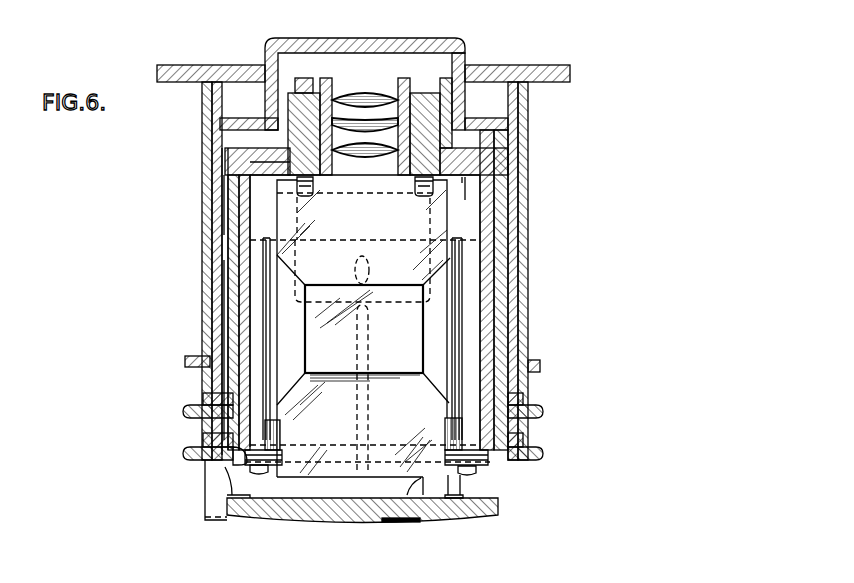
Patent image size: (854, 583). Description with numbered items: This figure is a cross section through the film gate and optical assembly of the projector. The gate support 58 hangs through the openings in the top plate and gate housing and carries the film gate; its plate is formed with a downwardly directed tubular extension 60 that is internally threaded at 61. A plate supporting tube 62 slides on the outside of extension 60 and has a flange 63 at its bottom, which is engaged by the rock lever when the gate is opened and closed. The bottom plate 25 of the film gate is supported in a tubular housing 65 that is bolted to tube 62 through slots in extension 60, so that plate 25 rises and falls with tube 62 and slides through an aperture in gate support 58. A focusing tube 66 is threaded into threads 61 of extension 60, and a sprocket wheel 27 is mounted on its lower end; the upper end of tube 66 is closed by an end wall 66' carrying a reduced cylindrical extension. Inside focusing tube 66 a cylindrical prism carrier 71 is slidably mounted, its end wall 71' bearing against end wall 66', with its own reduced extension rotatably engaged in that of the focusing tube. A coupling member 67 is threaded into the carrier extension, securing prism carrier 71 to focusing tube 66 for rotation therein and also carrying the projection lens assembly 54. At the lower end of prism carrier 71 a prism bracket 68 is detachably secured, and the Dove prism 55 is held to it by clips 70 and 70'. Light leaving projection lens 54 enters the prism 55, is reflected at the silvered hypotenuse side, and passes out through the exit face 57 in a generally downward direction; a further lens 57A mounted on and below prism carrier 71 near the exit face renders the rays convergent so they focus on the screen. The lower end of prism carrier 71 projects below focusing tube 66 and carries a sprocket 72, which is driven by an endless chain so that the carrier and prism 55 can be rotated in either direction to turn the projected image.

The bottom plate 25 is at (374, 40).
The tubular housing 65 is at (466, 52).
The gate support 58 is at (531, 65).
The plate supporting tube 62 is at (204, 130).
The tubular extension 60 is at (207, 189).
The internal threads 61 is at (220, 238).
The focusing tube 66 is at (225, 161).
The prism carrier 71 is at (202, 312).
The sprocket 72 is at (200, 460).
The coupling member 67 is at (362, 90).
The end wall 66' is at (500, 289).
The flange 63 is at (540, 367).
The sprocket wheel 27 is at (545, 410).
The projection lens 54 is at (375, 180).
The clip 70' is at (365, 200).
The end wall 71' is at (468, 200).
The prism bracket 68 is at (460, 303).
The Dove prism 55 is at (404, 343).
The clip 70 is at (366, 446).
The exit face 57 is at (357, 457).
The lens 57A is at (468, 503).